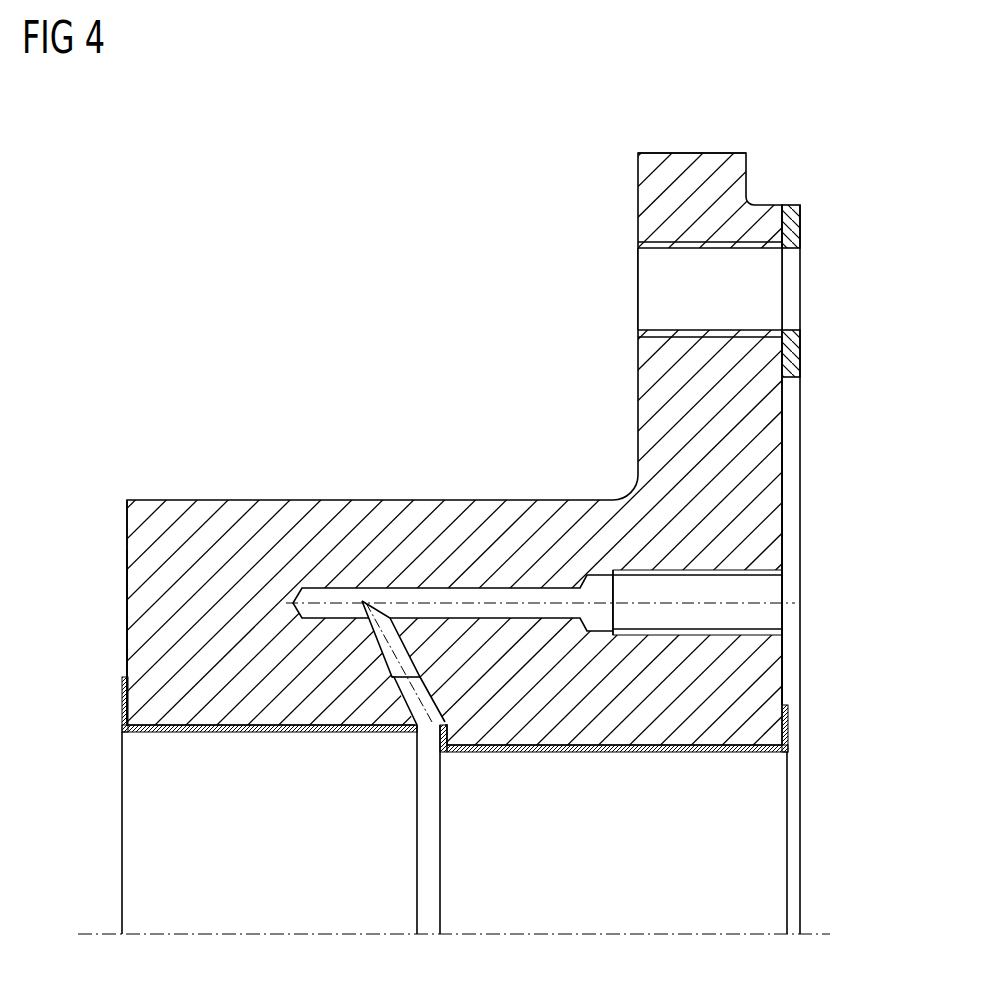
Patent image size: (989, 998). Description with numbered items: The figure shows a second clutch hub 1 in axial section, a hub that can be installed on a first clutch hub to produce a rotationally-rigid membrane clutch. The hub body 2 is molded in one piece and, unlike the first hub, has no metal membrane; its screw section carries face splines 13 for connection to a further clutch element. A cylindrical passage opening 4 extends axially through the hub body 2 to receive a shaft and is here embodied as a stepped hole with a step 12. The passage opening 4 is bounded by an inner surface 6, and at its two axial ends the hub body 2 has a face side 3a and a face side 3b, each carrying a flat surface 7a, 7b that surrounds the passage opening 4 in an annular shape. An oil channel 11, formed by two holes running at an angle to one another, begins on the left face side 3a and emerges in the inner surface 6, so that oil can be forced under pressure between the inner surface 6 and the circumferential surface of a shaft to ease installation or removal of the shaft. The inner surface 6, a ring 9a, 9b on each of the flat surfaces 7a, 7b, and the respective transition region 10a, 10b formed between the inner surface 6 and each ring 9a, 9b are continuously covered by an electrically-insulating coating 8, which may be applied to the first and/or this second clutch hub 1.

The clutch hub 1 is at (345, 222).
The hub body 2 is at (388, 510).
The face side 3a is at (124, 548).
The face side 3b is at (784, 470).
The passage opening 4 is at (567, 914).
The inner surface 6 is at (772, 870).
The flat surface 7a is at (127, 603).
The flat surface 7b is at (782, 668).
The electrically-insulating coating 8 is at (300, 733).
The ring 9a is at (123, 702).
The ring 9b is at (788, 722).
The transition region 10a is at (122, 733).
The transition region 10b is at (792, 752).
The oil channel 11 is at (478, 595).
The step 12 is at (440, 750).
The face splines 13 is at (802, 220).